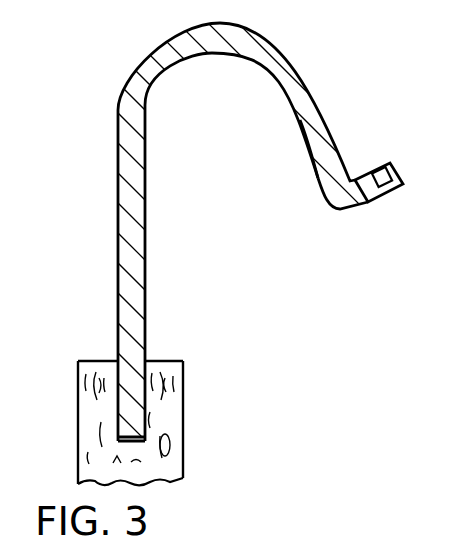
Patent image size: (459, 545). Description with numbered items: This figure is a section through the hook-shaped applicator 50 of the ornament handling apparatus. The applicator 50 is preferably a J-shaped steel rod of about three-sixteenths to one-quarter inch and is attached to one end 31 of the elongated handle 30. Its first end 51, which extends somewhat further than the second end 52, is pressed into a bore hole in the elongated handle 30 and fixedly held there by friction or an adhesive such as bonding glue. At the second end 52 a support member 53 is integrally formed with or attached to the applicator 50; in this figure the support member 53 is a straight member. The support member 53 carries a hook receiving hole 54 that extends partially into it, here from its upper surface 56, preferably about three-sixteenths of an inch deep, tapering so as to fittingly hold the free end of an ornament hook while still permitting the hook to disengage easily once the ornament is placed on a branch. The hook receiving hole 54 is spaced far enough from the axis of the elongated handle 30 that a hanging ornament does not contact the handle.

The elongated handle 30 is at (88, 433).
The end of elongated handle 31 is at (103, 360).
The hook-shaped applicator 50 is at (137, 83).
The first end of applicator 51 is at (136, 428).
The second end of applicator 52 is at (318, 168).
The support member 53 is at (365, 200).
The hook receiving hole 54 is at (377, 181).
The upper surface of support member 56 is at (365, 178).